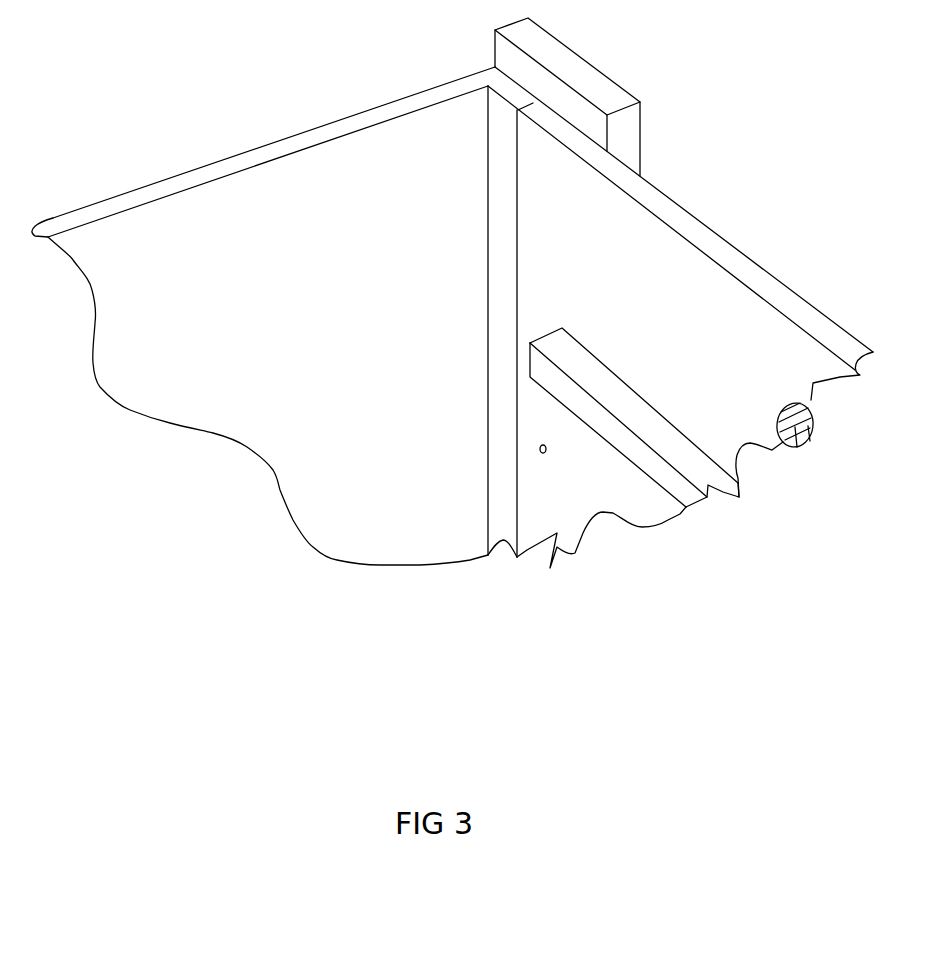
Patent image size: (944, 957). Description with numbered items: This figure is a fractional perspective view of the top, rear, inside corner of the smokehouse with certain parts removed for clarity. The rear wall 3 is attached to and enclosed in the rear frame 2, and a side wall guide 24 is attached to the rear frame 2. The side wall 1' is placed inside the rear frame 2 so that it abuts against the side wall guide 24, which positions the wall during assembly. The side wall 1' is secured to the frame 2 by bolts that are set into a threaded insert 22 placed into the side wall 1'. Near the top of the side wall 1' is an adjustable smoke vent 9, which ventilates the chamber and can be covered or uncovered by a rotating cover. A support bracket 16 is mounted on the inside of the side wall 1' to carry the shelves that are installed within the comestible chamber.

The side wall 1' is at (680, 317).
The rear frame 2 is at (603, 75).
The rear wall 3 is at (332, 130).
The smoke vent 9 is at (797, 433).
The support bracket 16 is at (668, 482).
The threaded insert 22 is at (547, 455).
The side wall guide 24 is at (498, 178).